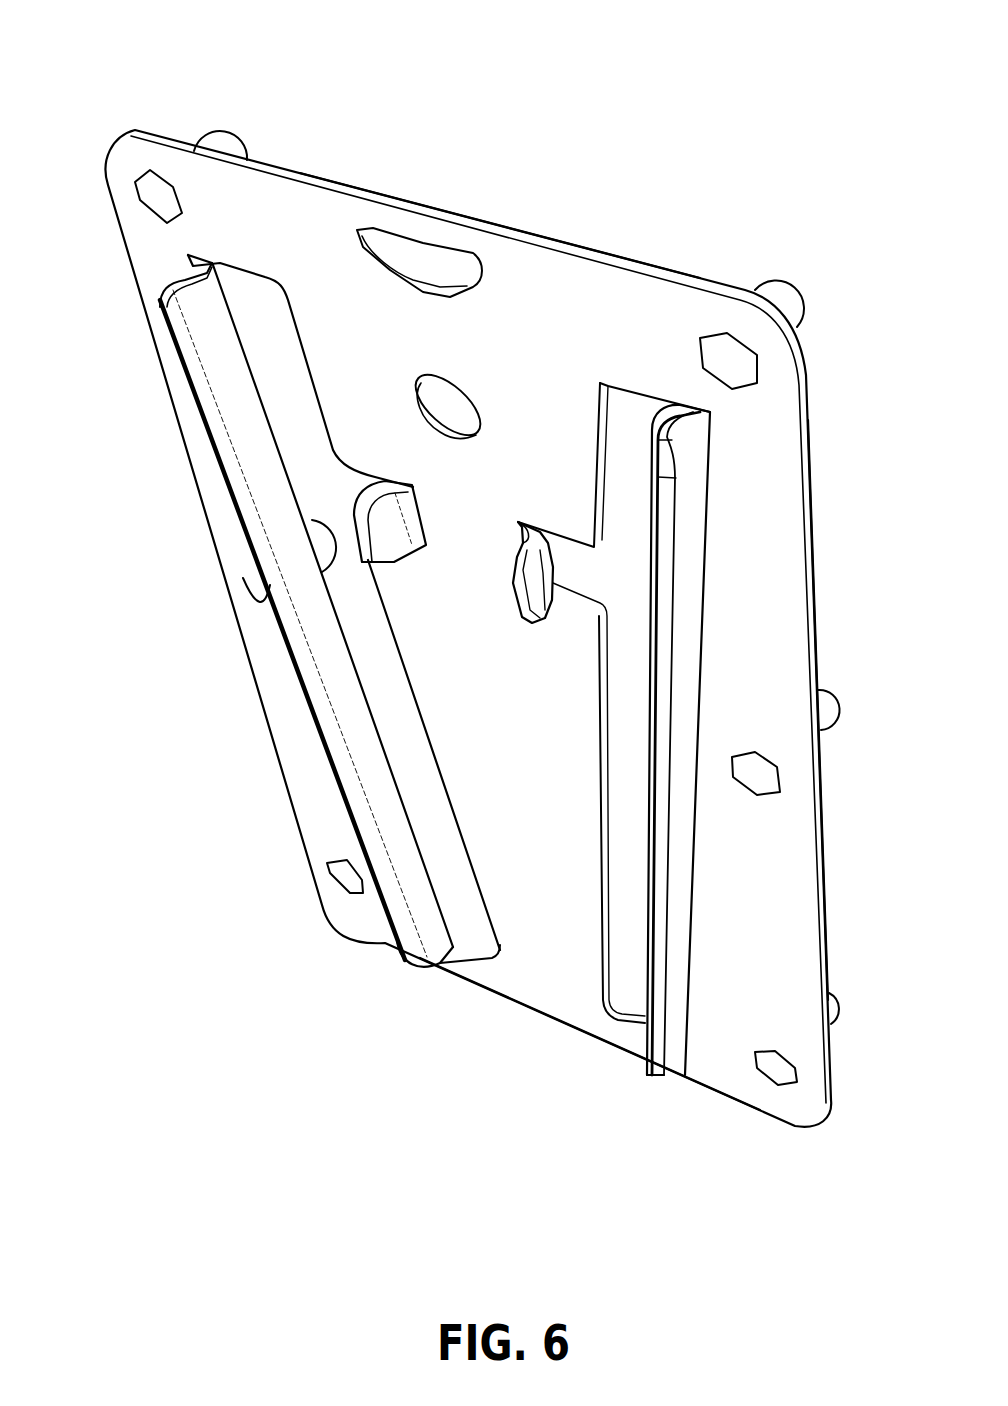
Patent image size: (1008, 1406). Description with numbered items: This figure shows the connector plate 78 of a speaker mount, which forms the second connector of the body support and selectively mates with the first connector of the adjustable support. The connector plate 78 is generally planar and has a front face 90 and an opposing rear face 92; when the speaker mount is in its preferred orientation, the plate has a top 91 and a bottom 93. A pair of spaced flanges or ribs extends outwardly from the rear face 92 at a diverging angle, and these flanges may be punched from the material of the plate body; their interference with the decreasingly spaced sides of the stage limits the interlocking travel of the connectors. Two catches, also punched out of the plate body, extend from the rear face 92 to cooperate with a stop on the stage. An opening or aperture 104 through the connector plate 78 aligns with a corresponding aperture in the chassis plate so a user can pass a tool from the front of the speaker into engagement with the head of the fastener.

The connector plate 78 is at (138, 60).
The front face 90 is at (600, 230).
The top 91 is at (512, 202).
The rear face 92 is at (778, 522).
The bottom 93 is at (540, 1032).
The aperture 104 is at (470, 380).